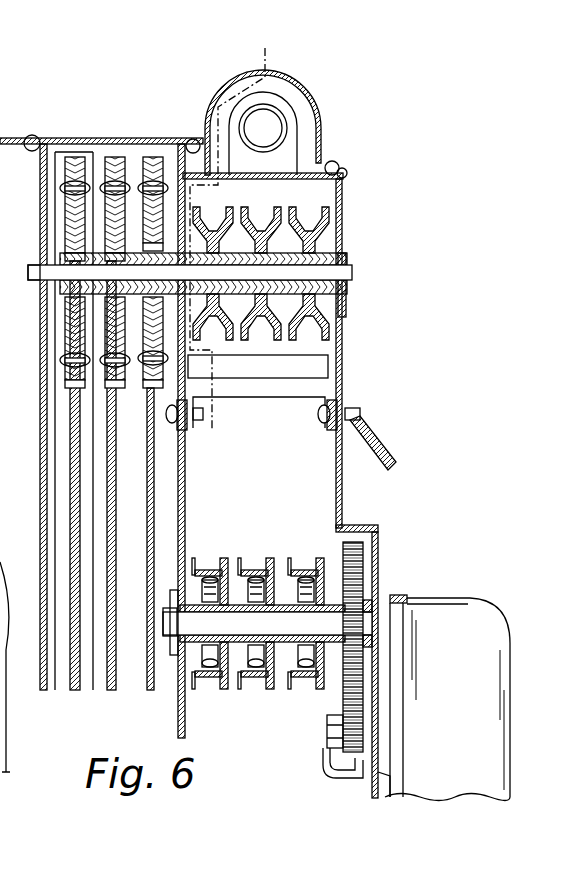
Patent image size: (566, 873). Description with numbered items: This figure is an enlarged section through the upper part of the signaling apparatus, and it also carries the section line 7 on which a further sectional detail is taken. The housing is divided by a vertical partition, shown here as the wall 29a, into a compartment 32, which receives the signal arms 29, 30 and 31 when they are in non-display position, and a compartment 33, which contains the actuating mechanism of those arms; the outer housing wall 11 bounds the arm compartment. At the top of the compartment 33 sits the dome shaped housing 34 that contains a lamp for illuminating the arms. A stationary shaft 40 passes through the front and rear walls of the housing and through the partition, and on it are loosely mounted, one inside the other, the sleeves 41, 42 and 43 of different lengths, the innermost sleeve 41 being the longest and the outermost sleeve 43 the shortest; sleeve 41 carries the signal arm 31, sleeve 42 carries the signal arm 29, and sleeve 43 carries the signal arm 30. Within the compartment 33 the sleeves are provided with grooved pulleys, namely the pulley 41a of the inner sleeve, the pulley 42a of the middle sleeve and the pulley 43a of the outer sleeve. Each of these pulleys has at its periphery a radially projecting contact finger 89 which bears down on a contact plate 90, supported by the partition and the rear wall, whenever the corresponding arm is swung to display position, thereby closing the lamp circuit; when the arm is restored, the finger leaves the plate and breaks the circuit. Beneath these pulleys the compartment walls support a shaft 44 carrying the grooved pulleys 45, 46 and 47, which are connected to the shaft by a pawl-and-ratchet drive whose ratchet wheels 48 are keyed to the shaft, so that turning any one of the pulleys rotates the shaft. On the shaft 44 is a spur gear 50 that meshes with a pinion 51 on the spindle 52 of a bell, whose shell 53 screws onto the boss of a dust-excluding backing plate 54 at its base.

The section line 7 is at (230, 242).
The dome shaped housing 34 is at (228, 90).
The contact finger 89 is at (261, 138).
The pulley of sleeve 43 43a is at (213, 411).
The pulley of sleeve 42 42a is at (318, 200).
The pulley of sleeve 41 41a is at (338, 207).
The sleeve 42 is at (115, 240).
The sleeve 43 is at (33, 276).
The sleeve 41 is at (45, 296).
The stationary shaft 40 is at (352, 272).
The contact plate 90 is at (308, 365).
The signal arm 31 is at (72, 415).
The signal arm 29 is at (107, 433).
The signal arm 30 is at (157, 468).
The compartment 32 is at (148, 594).
The partition wall 29a is at (185, 500).
The compartment 33 is at (336, 629).
The housing 11 is at (108, 453).
The ratchet wheel 48 is at (230, 598).
The grooved pulley 47 is at (218, 575).
The grooved pulley 46 is at (263, 572).
The grooved pulley 45 is at (305, 572).
The shaft 44 is at (267, 622).
The spur gear 50 is at (367, 549).
The dust-excluding backing plate 54 is at (390, 598).
The bell shell 53 is at (475, 608).
The spindle 52 is at (327, 727).
The pinion 51 is at (353, 752).